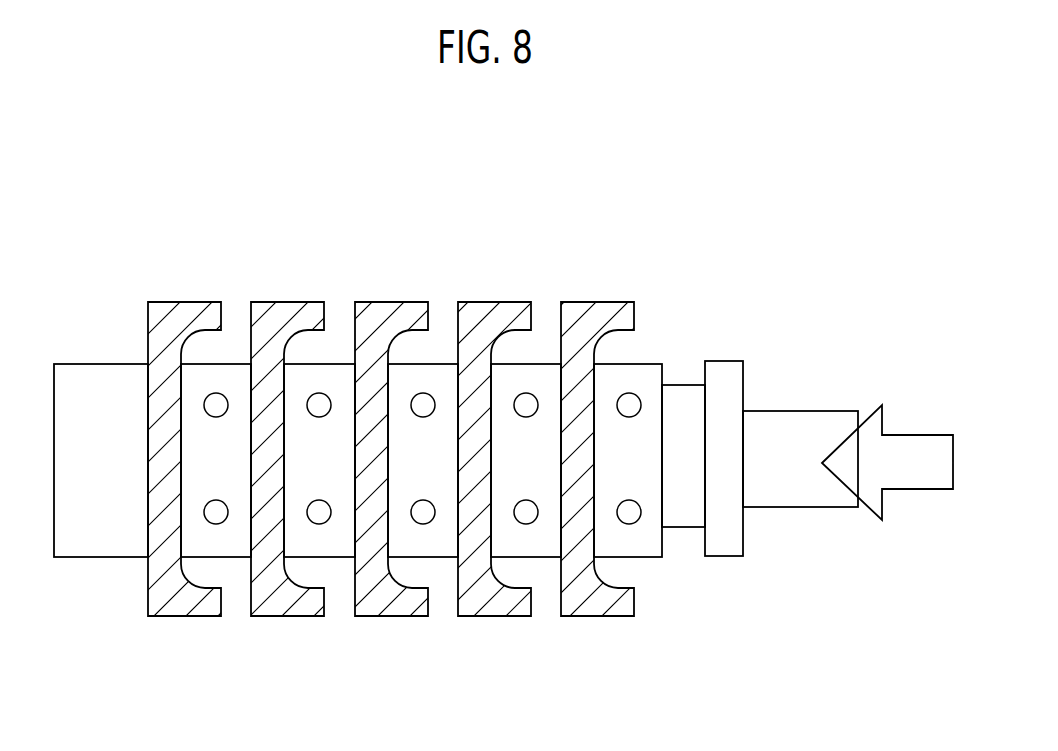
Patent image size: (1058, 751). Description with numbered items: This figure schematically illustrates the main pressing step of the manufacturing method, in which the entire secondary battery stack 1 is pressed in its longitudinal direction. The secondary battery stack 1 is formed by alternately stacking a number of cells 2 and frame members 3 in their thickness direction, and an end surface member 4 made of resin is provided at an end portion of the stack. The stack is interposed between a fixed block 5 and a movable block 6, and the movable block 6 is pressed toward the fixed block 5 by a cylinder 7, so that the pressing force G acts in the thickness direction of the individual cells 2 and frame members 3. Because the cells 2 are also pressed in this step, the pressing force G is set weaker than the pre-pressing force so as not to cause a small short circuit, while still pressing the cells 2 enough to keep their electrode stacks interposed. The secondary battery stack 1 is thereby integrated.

The secondary battery stack 1 is at (790, 217).
The cell 2 is at (533, 530).
The frame member 3 is at (597, 320).
The end surface member 4 is at (680, 398).
The fixed block 5 is at (80, 372).
The movable block 6 is at (727, 372).
The cylinder 7 is at (810, 423).